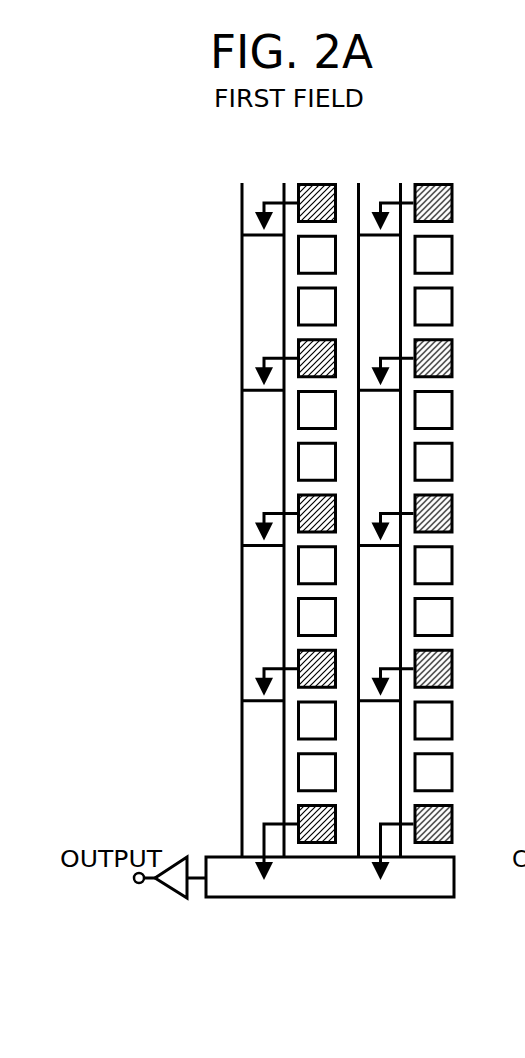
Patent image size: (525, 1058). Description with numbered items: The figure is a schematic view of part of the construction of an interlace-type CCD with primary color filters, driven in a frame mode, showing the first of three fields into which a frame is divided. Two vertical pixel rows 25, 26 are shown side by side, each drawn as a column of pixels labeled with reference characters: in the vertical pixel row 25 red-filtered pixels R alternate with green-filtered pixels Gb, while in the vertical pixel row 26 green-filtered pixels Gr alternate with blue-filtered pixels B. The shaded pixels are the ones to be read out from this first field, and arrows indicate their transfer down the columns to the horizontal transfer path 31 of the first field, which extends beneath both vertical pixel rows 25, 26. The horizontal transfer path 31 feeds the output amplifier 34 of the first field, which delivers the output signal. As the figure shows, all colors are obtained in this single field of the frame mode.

The vertical pixel row 25 is at (317, 172).
The vertical pixel row 26 is at (436, 172).
The horizontal transfer path 31 is at (454, 883).
The output amplifier 34 is at (171, 888).